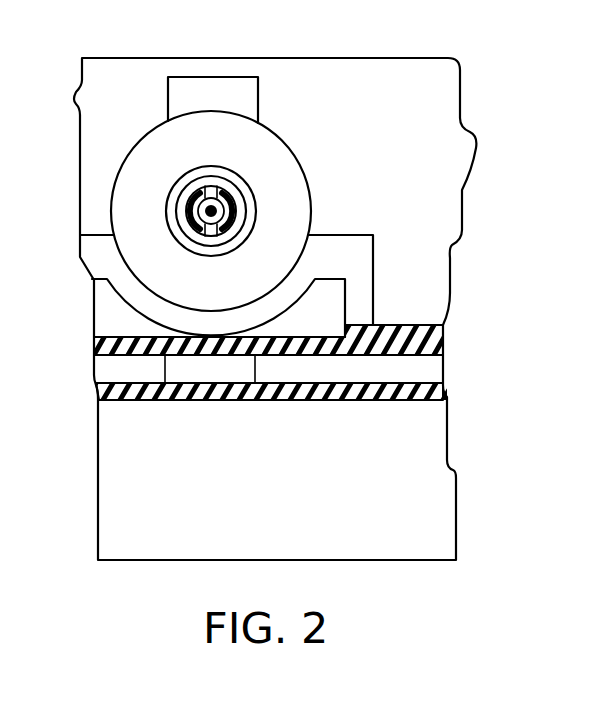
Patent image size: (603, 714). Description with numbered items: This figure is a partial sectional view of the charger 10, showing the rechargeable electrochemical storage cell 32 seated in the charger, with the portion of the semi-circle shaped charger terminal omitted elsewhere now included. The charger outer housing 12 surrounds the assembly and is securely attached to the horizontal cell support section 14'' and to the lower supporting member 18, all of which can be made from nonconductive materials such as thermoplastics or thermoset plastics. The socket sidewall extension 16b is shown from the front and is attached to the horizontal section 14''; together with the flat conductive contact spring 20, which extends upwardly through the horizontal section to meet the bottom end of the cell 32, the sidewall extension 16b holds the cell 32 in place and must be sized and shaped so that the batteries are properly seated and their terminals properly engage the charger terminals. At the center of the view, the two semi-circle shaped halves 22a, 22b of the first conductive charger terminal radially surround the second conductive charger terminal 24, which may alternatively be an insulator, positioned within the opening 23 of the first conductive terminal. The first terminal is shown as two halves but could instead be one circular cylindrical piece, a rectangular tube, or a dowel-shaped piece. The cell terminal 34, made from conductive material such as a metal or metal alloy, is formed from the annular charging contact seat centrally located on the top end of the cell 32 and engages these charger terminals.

The charger 10 is at (493, 137).
The charger outer housing 12 is at (335, 57).
The horizontal cell support section 14'' is at (272, 313).
The socket sidewall extension 16b is at (343, 250).
The lower supporting member 18 is at (318, 389).
The conductive contact spring 20 is at (259, 98).
The first conductive charger terminal half 22a is at (193, 195).
The first conductive charger terminal half 22b is at (228, 192).
The opening 23 is at (214, 214).
The second conductive charger terminal 24 is at (205, 207).
The rechargeable electrochemical cell 32 is at (297, 153).
The cell terminal 34 is at (247, 222).